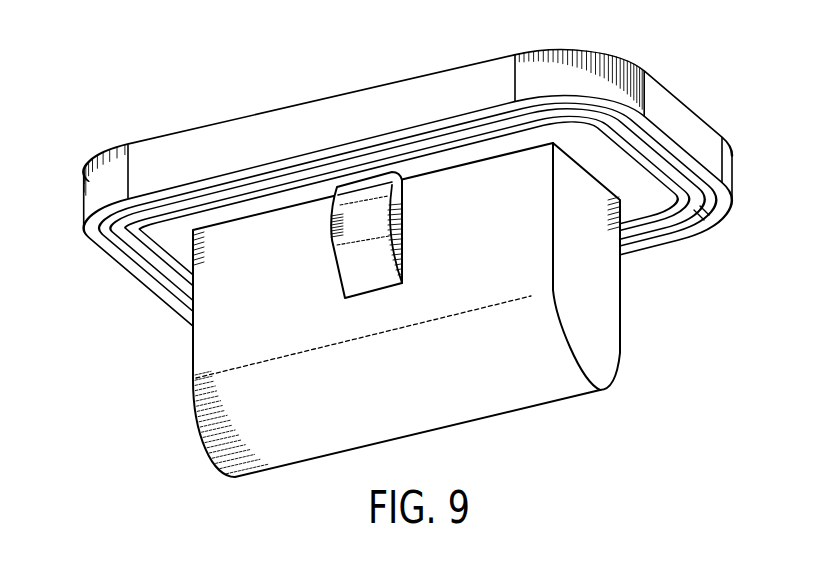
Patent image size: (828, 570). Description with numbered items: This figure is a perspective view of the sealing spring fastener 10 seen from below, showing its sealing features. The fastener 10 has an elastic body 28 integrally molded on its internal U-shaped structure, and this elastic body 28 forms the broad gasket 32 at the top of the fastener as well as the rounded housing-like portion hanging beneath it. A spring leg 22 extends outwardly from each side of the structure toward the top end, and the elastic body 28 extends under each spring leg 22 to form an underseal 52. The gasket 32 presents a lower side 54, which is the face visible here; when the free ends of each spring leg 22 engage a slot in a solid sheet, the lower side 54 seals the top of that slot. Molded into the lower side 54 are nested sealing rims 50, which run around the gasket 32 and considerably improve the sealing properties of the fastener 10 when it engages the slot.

The sealing spring fastener 10 is at (396, 242).
The gasket 32 is at (396, 194).
The sealing rim 50 is at (92, 244).
The lower side 54 is at (702, 217).
The elastic body 28 is at (609, 345).
The spring leg 22 is at (368, 235).
The underseal 52 is at (402, 215).